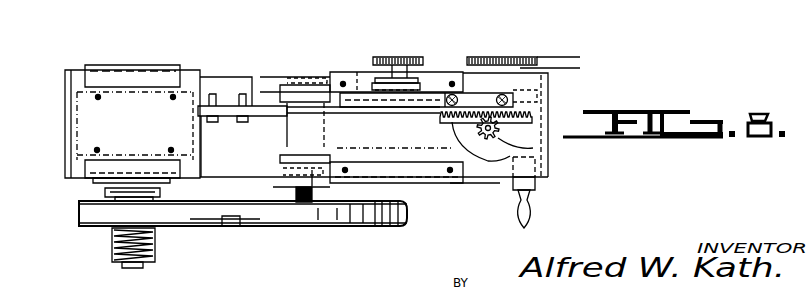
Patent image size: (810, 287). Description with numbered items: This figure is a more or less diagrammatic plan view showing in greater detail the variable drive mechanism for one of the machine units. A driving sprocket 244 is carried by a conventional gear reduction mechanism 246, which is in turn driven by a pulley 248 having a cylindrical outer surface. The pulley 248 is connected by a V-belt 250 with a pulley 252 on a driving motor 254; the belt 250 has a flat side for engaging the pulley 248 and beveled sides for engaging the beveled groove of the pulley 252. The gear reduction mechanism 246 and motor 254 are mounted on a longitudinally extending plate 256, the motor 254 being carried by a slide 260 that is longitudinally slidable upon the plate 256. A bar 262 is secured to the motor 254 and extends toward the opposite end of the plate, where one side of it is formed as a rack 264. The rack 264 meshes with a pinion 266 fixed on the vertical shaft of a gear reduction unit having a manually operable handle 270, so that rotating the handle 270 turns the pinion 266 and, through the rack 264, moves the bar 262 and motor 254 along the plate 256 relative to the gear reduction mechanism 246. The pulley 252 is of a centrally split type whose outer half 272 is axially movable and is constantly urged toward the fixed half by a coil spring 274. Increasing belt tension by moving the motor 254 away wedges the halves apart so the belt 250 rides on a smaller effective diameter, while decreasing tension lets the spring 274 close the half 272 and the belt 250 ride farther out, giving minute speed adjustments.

The driving sprocket 244 is at (411, 63).
The gear reduction mechanism 246 is at (357, 63).
The pulley 248 is at (377, 227).
The V-belt 250 is at (222, 227).
The pulley 252 is at (79, 201).
The driving motor 254 is at (108, 65).
The plate 256 is at (482, 182).
The slide 260 is at (423, 185).
The bar 262 is at (263, 110).
The rack 264 is at (536, 124).
The pinion 266 is at (540, 145).
The handle 270 is at (535, 195).
The outer half 272 is at (80, 226).
The coil spring 274 is at (112, 244).